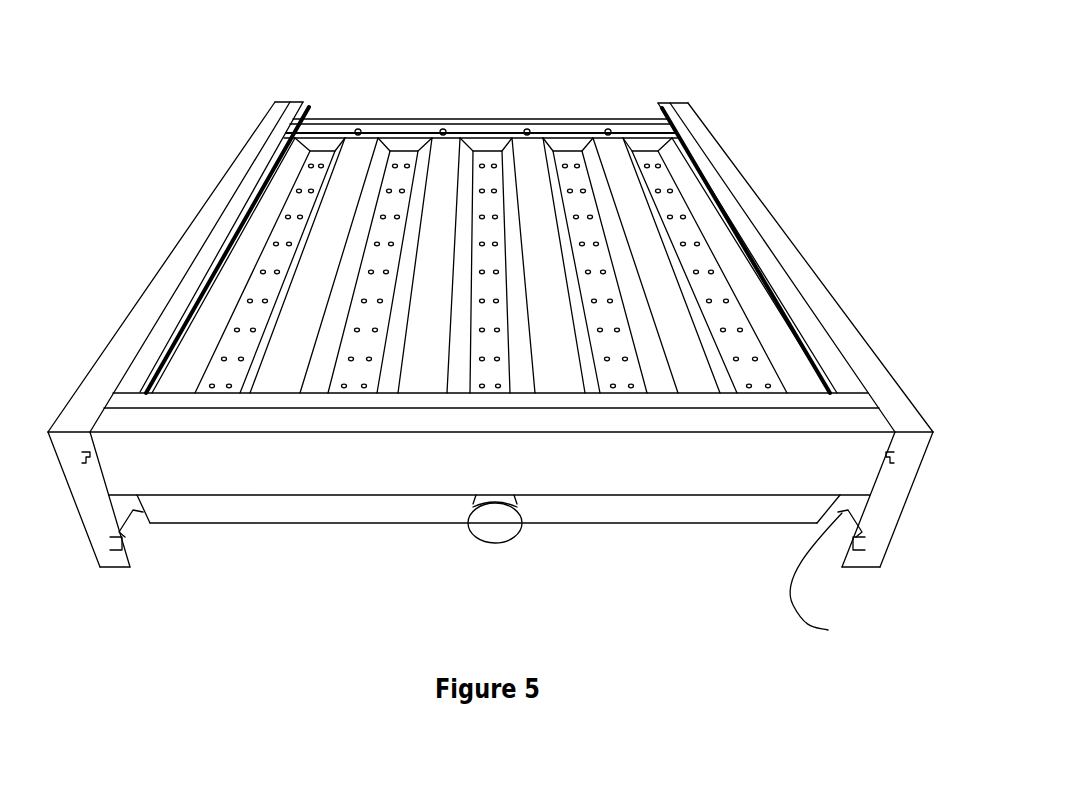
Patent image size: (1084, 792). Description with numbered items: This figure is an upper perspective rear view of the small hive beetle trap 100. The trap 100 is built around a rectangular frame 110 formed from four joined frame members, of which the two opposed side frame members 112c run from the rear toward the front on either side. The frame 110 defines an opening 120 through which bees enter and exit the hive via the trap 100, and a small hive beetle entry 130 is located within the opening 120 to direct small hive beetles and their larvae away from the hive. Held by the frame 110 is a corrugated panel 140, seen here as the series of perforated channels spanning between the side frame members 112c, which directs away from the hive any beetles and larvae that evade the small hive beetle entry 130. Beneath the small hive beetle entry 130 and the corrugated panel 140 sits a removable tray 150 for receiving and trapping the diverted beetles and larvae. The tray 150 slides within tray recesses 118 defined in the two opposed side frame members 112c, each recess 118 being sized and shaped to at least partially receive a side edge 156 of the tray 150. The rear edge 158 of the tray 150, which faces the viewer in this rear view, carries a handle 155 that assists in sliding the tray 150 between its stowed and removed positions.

The small hive beetle trap 100 is at (790, 91).
The rectangular frame 110 is at (770, 189).
The side frame member 112c is at (808, 264).
The tray recess 118 is at (856, 525).
The opening 120 is at (400, 108).
The small hive beetle entry 130 is at (578, 108).
The corrugated panel 140 is at (308, 266).
The removable tray 150 is at (375, 524).
The handle 155 is at (500, 525).
The side edge 156 is at (835, 585).
The rear edge 158 is at (267, 503).